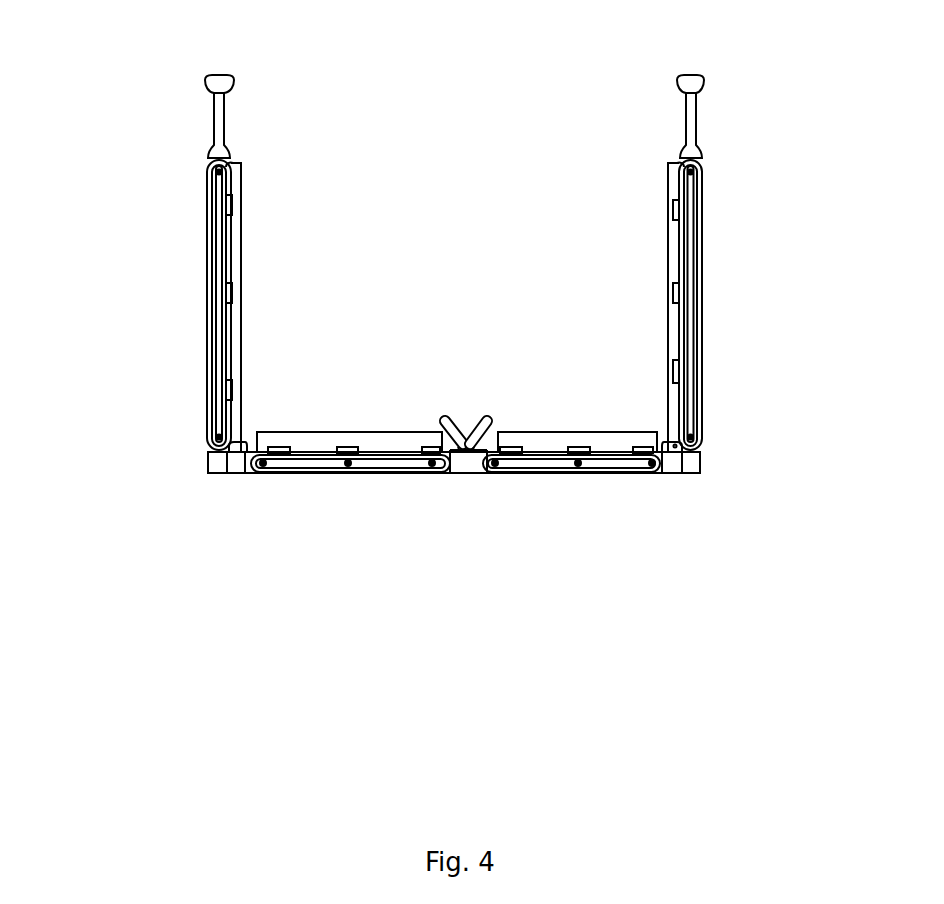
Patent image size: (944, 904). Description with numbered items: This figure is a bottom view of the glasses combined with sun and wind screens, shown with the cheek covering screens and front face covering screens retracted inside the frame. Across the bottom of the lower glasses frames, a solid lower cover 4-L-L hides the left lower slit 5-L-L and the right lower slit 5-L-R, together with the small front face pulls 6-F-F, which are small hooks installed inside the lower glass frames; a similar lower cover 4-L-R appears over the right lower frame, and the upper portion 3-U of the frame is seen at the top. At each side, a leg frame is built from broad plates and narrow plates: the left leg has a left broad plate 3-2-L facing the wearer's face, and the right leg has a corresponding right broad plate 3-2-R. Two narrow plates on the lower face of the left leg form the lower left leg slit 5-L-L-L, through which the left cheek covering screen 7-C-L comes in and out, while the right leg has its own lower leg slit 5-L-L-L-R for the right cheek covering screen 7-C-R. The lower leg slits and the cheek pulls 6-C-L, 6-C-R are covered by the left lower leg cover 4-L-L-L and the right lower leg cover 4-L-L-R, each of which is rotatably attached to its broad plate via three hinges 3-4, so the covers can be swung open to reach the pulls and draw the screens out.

The right cheek pull 6-C-R is at (232, 163).
The upper frame member 3-U is at (232, 202).
The right post lower link lug 5-L-L-L-R is at (225, 227).
The right lower leg cover 4-L-L-R is at (238, 257).
The right cheek covering screen 7-C-R is at (218, 318).
The right broad plate 3-2-R is at (223, 372).
The right lower plate 4-L-R is at (317, 441).
The front face pulls 6-F-F is at (431, 460).
The left lower slit 5-L-L is at (513, 462).
The solid lower cover 4-L-L is at (592, 443).
The hinges 3-4 is at (674, 208).
The left broad plate 3-2-L is at (690, 240).
The left lower leg cover 4-L-L-L is at (673, 280).
The lower left leg slit 5-L-L-L is at (696, 197).
The left cheek covering screen 7-C-L is at (697, 241).
The left cheek pull 6-C-L is at (693, 298).
The right lower slit 5-L-R is at (322, 466).